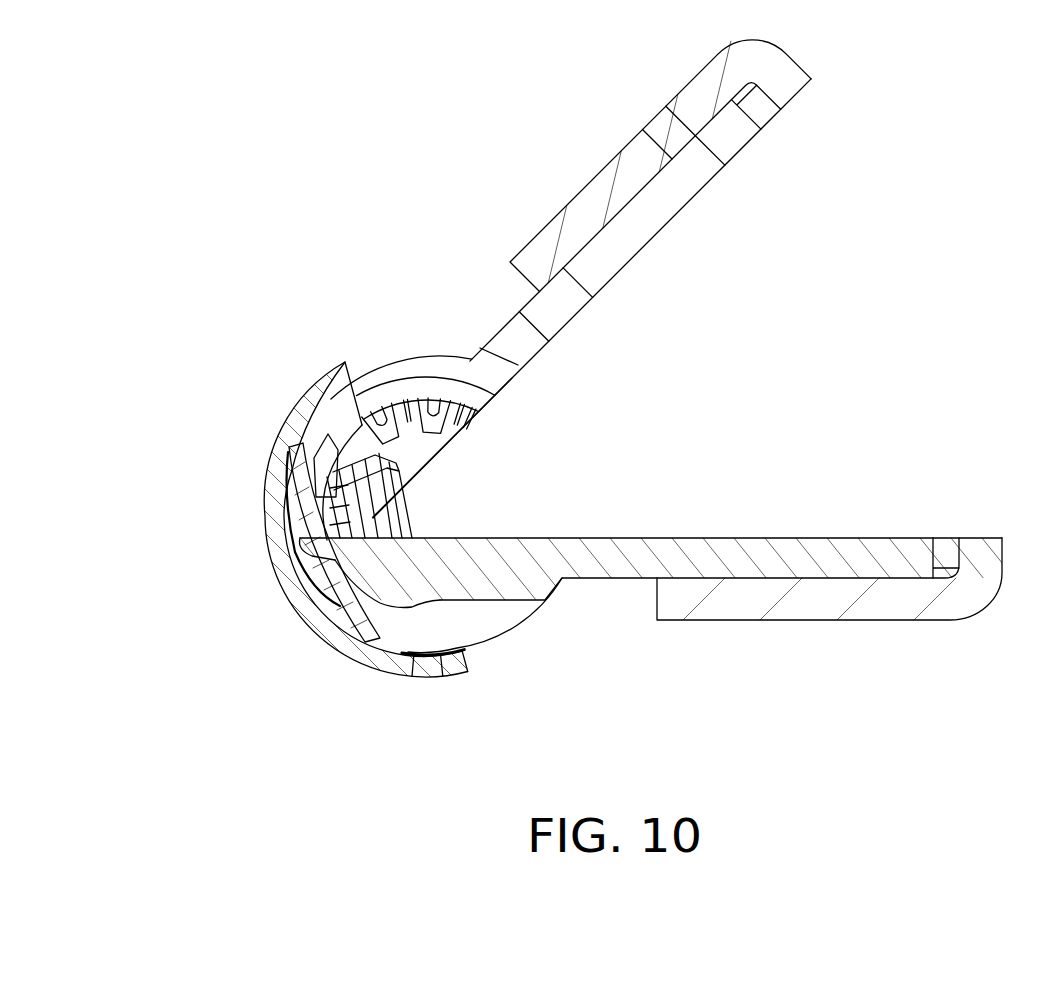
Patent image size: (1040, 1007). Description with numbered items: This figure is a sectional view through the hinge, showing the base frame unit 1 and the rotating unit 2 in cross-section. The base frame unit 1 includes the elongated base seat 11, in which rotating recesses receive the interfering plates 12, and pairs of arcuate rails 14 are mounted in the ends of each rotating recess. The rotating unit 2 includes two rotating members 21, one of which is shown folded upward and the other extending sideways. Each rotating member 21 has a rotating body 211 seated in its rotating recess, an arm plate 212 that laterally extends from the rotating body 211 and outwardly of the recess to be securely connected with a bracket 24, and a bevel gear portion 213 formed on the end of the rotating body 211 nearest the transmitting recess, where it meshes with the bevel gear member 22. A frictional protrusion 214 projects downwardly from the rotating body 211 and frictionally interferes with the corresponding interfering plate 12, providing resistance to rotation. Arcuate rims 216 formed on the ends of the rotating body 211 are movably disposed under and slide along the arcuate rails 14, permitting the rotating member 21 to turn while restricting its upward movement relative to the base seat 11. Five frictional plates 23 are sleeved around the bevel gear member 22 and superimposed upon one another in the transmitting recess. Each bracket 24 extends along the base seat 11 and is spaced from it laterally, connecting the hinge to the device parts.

The base frame unit 1 is at (192, 590).
The rotating unit 2 is at (882, 487).
The base seat 11 is at (327, 643).
The interfering plate 12 is at (335, 574).
The arcuate rail 14 is at (325, 455).
The rotating member 21 is at (737, 189).
The bevel gear member 22 is at (332, 514).
The frictional plate 23 is at (382, 525).
The bracket 24 is at (603, 167).
The rotating body 211 is at (478, 397).
The arm plate 212 is at (657, 215).
The bevel gear portion 213 is at (430, 457).
The frictional protrusion 214 is at (413, 600).
The arcuate rim 216 is at (412, 367).